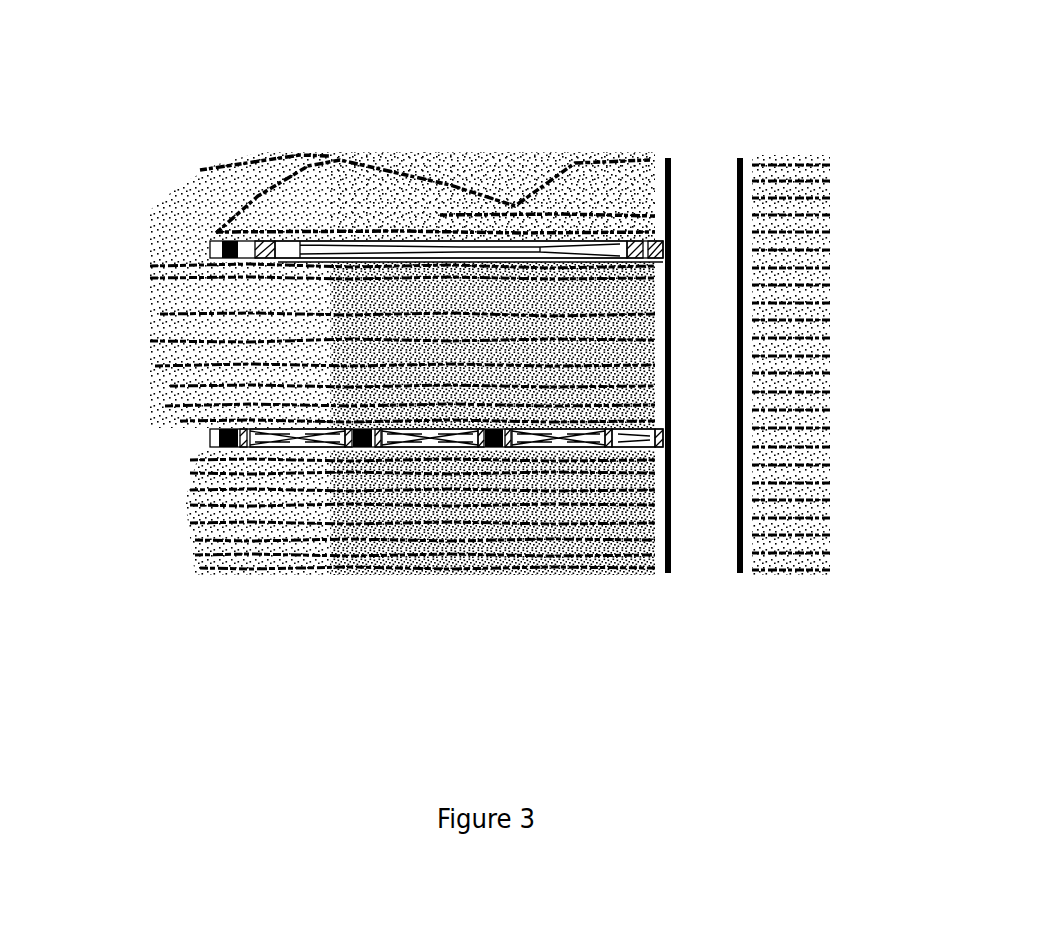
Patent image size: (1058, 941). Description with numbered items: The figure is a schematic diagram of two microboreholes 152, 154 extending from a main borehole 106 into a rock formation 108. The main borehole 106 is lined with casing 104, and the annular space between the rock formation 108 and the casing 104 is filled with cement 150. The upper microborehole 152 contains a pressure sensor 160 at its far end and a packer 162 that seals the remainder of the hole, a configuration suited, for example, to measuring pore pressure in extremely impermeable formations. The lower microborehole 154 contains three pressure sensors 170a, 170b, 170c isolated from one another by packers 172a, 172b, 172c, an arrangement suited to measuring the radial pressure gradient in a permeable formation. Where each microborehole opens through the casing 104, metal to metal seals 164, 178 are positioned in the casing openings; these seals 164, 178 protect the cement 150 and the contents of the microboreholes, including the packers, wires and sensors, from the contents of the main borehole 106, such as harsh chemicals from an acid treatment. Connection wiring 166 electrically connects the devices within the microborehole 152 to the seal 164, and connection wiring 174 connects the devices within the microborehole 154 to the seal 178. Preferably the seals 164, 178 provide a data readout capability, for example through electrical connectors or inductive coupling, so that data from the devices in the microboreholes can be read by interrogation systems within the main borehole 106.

The casing 104 is at (740, 160).
The main borehole 106 is at (688, 170).
The rock formation 108 is at (490, 363).
The cement 150 is at (750, 573).
The microborehole 152 is at (360, 167).
The microborehole 154 is at (368, 536).
The pressure sensor 160 is at (213, 241).
The packer 162 is at (490, 246).
The metal to metal seal 164 is at (650, 241).
The connection wiring 166 is at (655, 247).
The pressure sensor 170a is at (225, 448).
The pressure sensor 170b is at (362, 449).
The pressure sensor 170c is at (496, 449).
The packer 172a is at (296, 448).
The packer 172b is at (429, 449).
The packer 172c is at (562, 448).
The connection wiring 174 is at (648, 450).
The metal to metal seal 178 is at (670, 452).